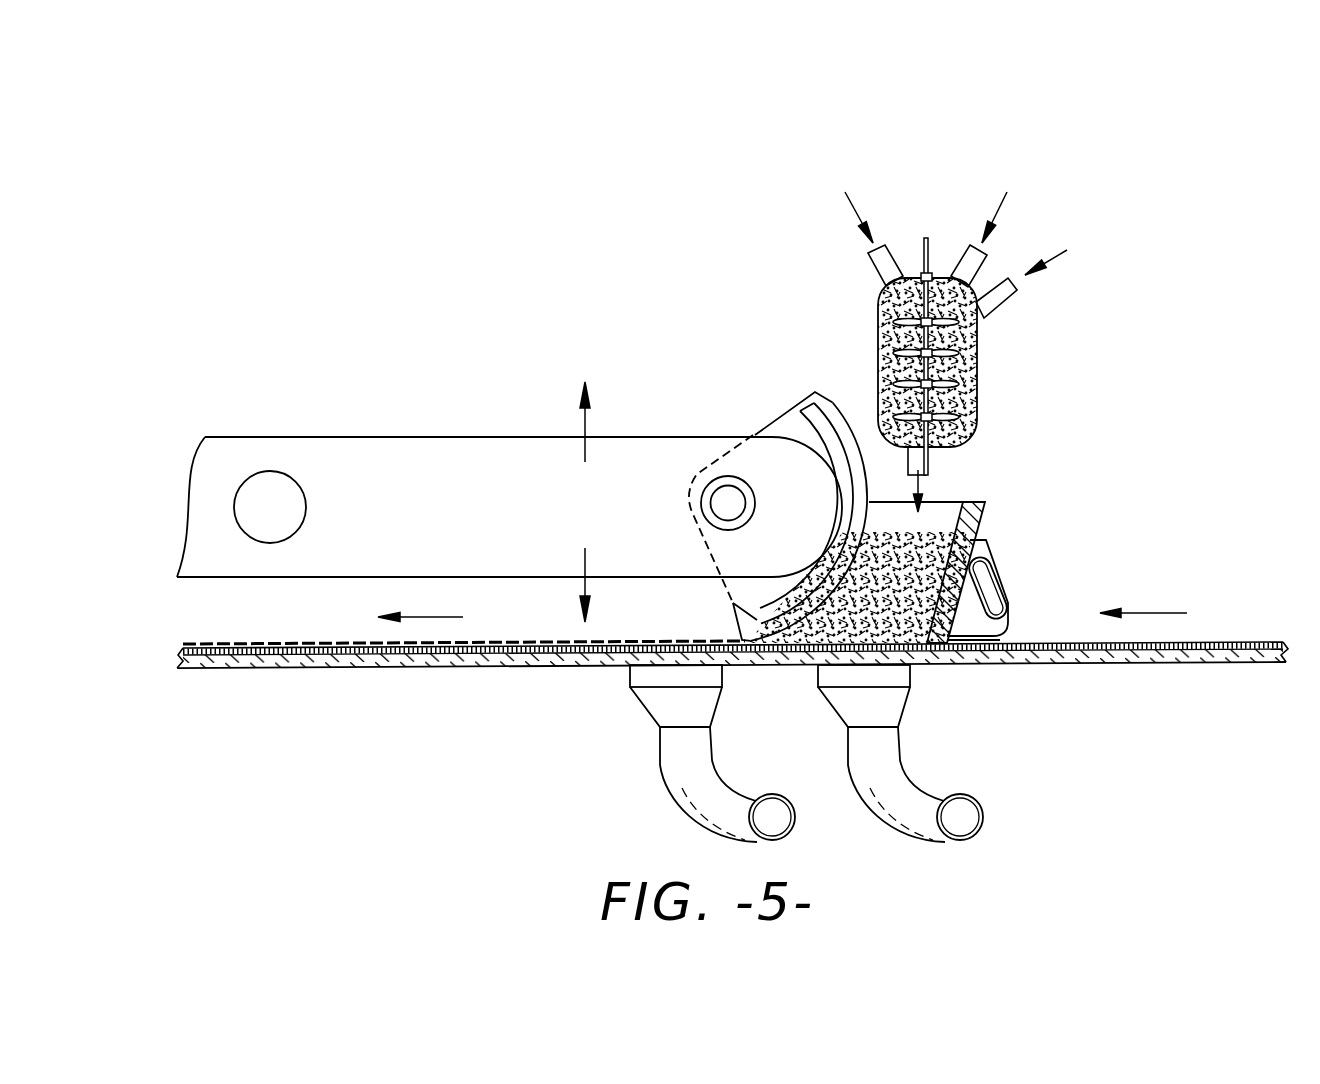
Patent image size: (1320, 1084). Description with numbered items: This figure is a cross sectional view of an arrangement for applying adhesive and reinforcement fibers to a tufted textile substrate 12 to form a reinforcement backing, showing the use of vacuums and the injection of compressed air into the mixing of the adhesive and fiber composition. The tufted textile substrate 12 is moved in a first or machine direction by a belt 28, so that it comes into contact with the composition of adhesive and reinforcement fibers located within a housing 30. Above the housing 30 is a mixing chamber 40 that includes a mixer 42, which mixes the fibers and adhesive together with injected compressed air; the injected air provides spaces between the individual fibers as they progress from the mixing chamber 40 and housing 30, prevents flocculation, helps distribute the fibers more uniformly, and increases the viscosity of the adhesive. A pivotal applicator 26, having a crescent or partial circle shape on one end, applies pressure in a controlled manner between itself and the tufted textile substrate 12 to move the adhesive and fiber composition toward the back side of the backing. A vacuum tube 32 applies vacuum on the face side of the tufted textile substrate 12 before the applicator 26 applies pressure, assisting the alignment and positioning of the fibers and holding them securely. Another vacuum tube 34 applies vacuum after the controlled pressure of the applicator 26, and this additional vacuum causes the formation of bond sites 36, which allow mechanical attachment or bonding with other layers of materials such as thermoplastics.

The tufted textile substrate 12 is at (1047, 642).
The applicator 26 is at (820, 407).
The belt 28 is at (1205, 643).
The housing 30 is at (972, 522).
The vacuum tube 32 is at (912, 785).
The vacuum tube 34 is at (727, 785).
The bond sites 36 is at (232, 645).
The mixing chamber 40 is at (975, 408).
The mixer 42 is at (958, 362).